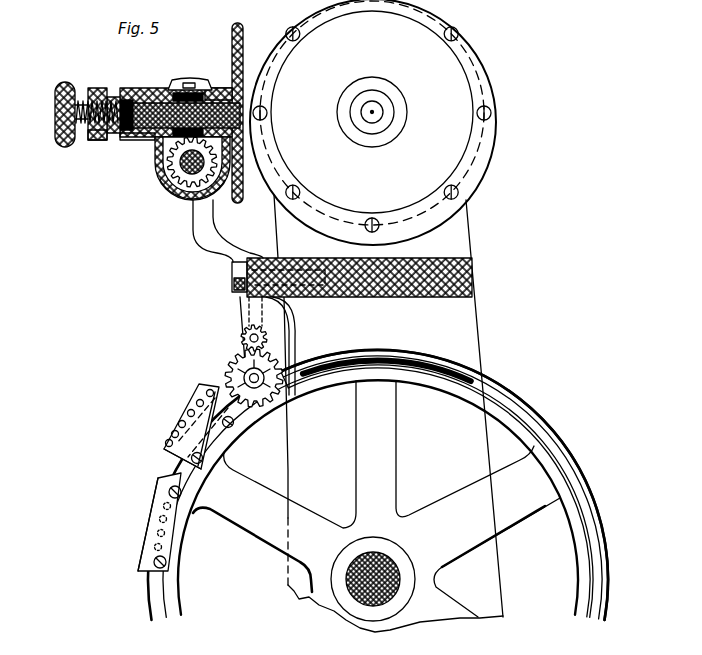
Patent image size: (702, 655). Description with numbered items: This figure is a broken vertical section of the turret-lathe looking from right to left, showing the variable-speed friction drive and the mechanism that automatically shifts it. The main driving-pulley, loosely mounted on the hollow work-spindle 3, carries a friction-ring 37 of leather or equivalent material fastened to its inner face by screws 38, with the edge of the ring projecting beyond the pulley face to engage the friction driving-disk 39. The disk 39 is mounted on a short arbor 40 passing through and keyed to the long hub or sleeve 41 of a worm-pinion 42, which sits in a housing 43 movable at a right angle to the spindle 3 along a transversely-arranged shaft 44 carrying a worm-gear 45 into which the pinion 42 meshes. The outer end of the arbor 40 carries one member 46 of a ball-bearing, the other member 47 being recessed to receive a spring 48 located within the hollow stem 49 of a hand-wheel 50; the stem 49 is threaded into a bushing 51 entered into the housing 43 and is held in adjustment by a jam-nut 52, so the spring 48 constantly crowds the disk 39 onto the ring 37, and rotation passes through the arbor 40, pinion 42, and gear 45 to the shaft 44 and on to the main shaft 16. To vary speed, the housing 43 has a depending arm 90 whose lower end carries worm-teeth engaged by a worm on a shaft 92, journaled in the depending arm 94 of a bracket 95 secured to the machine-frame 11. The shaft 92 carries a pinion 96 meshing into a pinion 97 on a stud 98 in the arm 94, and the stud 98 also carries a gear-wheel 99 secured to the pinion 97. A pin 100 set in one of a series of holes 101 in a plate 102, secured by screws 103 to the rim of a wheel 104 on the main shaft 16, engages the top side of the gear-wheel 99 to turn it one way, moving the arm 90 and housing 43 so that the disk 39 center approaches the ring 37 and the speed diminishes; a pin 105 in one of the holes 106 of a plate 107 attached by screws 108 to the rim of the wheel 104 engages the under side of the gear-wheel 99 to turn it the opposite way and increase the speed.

The hollow work-spindle 3 is at (395, 110).
The machine-frame 11 is at (375, 413).
The main shaft 16 is at (368, 570).
The friction-ring 37 is at (275, 32).
The screws 38 is at (300, 36).
The friction driving-disk 39 is at (232, 33).
The arbor 40 is at (210, 89).
The hub or sleeve 41 is at (140, 139).
The worm-pinion 42 is at (188, 80).
The housing 43 is at (165, 90).
The transversely-arranged shaft 44 is at (156, 172).
The worm-gear 45 is at (168, 194).
The ball-bearing member 46 is at (138, 103).
The ball-bearing member 47 is at (122, 100).
The spring 48 is at (80, 131).
The hollow stem 49 is at (89, 100).
The hand-wheel 50 is at (56, 113).
The bushing 51 is at (112, 97).
The jam-nut 52 is at (95, 140).
The depending arm 90 is at (207, 229).
The shaft 92 is at (268, 338).
The depending arm 94 is at (239, 314).
The bracket 95 is at (232, 278).
The pinion 96 is at (266, 334).
The pinion 97 is at (236, 362).
The stud 98 is at (256, 385).
The gear-wheel 99 is at (262, 372).
The pin 100 is at (212, 385).
The holes 101 is at (206, 395).
The plate 102 is at (163, 449).
The screws 103 is at (229, 424).
The wheel 104 is at (313, 386).
The pin 105 is at (167, 479).
The holes 106 is at (164, 506).
The plate 107 is at (148, 523).
The screws 108 is at (181, 492).